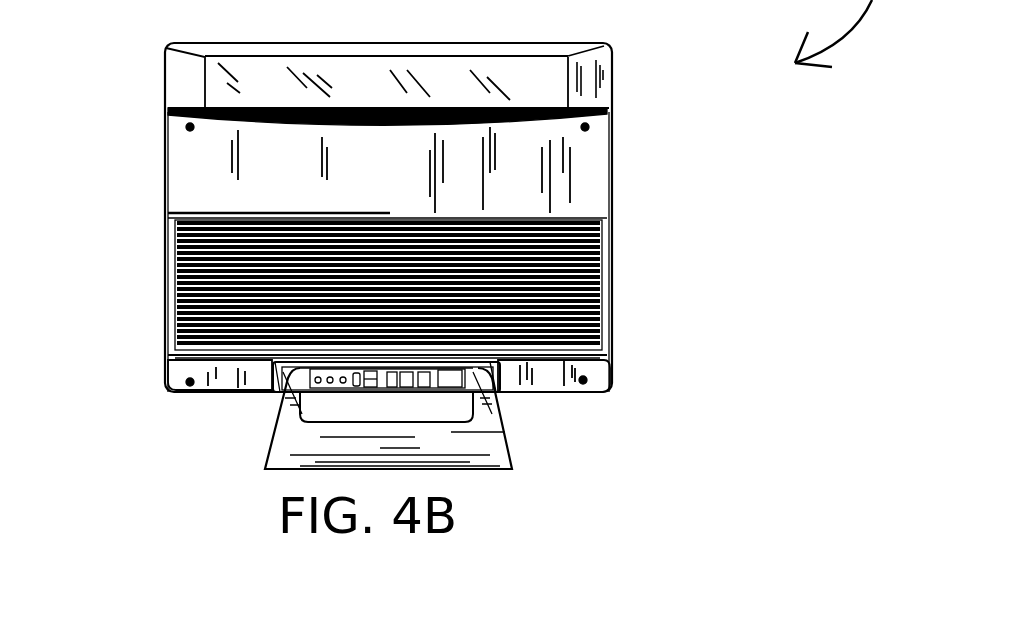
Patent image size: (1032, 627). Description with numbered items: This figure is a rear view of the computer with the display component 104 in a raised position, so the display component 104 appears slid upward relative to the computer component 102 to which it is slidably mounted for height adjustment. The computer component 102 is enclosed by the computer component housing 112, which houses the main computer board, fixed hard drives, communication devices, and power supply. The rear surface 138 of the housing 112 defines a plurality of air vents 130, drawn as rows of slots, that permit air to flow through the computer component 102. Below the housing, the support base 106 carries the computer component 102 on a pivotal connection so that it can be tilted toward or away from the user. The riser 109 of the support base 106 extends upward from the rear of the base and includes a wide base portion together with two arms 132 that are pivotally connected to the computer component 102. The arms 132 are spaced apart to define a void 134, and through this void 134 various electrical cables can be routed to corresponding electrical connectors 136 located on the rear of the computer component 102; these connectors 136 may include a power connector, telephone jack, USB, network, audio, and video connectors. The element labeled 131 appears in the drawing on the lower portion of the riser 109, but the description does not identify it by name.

The computer component 102 is at (610, 217).
The display component 104 is at (604, 48).
The support base 106 is at (505, 447).
The riser 109 is at (513, 477).
The computer component housing 112 is at (192, 173).
The air vents 130 is at (598, 283).
The stand base 131 is at (272, 468).
The arms 132 is at (505, 397).
The void 134 is at (275, 420).
The electrical connectors 136 is at (275, 390).
The rear surface 138 is at (602, 166).